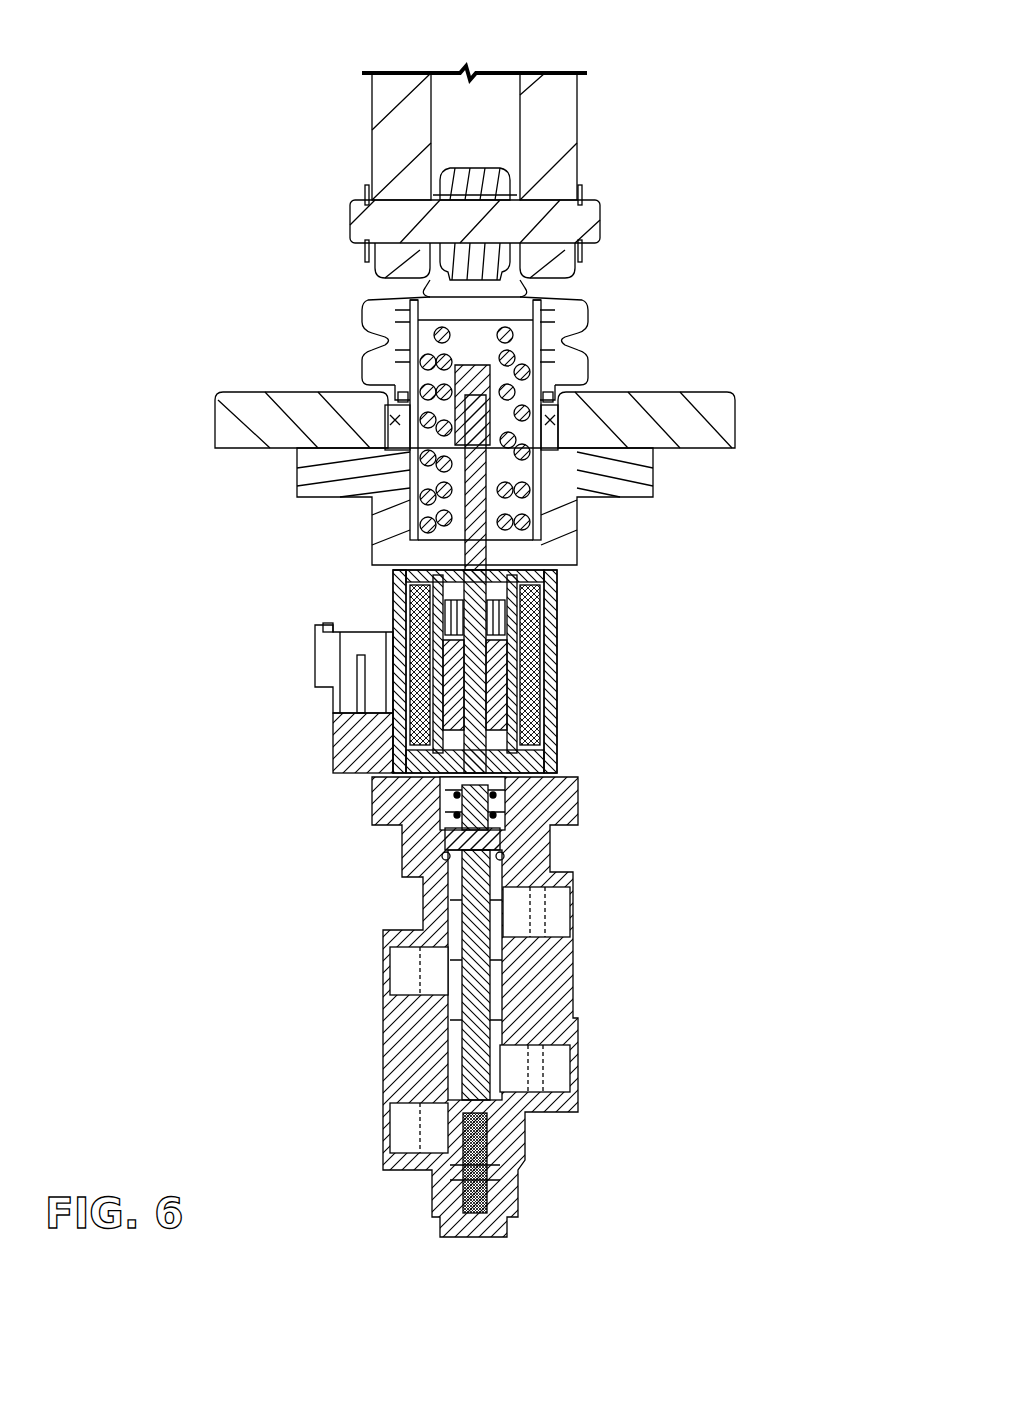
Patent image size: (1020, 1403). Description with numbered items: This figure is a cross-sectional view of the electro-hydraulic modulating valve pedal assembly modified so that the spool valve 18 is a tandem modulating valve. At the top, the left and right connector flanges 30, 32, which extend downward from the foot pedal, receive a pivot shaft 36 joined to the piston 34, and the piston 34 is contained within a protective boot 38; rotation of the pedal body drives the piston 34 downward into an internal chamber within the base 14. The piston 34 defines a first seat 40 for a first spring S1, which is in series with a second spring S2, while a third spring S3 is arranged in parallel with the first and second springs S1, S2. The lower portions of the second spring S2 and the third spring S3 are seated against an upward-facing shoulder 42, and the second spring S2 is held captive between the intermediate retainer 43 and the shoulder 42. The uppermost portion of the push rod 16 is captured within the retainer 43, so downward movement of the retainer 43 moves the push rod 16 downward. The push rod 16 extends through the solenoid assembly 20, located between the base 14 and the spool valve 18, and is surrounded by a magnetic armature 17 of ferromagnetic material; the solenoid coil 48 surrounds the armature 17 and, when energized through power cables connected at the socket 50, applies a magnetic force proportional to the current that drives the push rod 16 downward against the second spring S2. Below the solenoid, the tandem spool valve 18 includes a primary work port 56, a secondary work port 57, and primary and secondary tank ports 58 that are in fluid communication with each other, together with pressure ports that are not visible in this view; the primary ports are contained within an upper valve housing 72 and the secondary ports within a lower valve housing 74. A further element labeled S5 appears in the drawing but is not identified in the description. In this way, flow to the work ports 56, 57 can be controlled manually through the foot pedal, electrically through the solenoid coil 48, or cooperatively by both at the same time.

The base 14 is at (837, 358).
The push rod 16 is at (500, 615).
The magnetic armature 17 is at (500, 705).
The spool valve 18 is at (837, 1228).
The solenoid assembly 20 is at (555, 700).
The left connector flange 30 is at (372, 138).
The right connector flange 32 is at (577, 150).
The piston 34 is at (525, 302).
The pivot shaft 36 is at (600, 220).
The protective boot 38 is at (580, 330).
The first seat 40 is at (440, 332).
The upward-facing shoulder 42 is at (297, 480).
The intermediate retainer 43 is at (438, 413).
The solenoid coil 48 is at (530, 650).
The socket 50 is at (370, 630).
The primary work port 56 is at (383, 976).
The secondary work port 57 is at (383, 1131).
The tank port 58 is at (578, 921).
The upper valve housing 72 is at (500, 847).
The lower valve housing 74 is at (530, 1130).
The first spring S1 is at (510, 325).
The second spring S2 is at (512, 497).
The third spring S3 is at (520, 395).
The fifth seal S5 is at (372, 808).